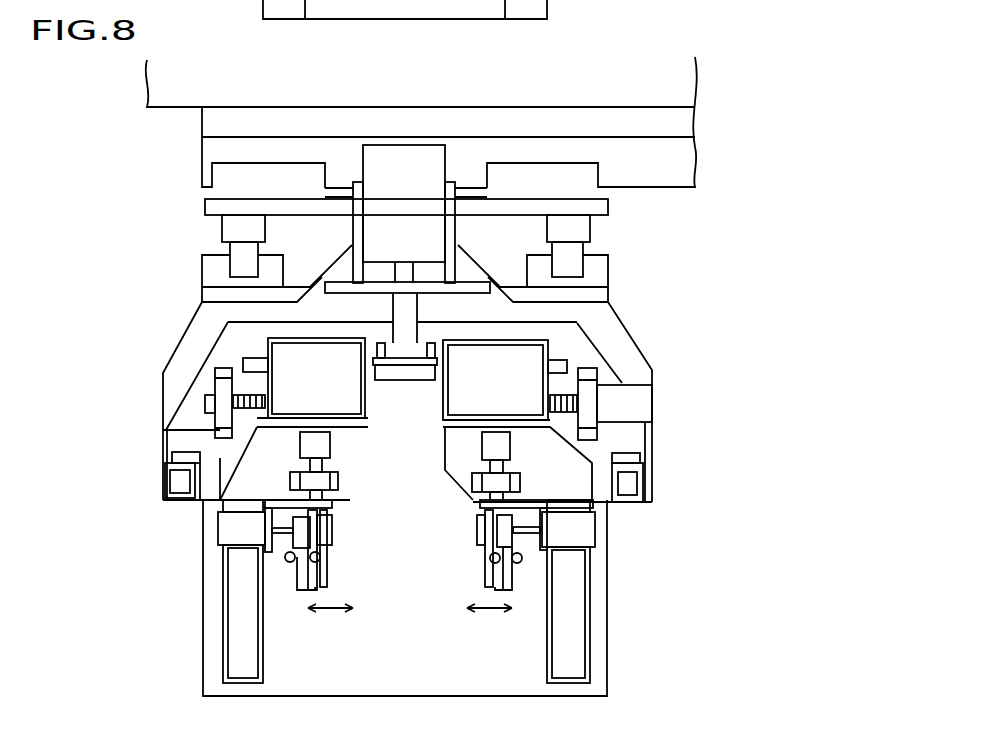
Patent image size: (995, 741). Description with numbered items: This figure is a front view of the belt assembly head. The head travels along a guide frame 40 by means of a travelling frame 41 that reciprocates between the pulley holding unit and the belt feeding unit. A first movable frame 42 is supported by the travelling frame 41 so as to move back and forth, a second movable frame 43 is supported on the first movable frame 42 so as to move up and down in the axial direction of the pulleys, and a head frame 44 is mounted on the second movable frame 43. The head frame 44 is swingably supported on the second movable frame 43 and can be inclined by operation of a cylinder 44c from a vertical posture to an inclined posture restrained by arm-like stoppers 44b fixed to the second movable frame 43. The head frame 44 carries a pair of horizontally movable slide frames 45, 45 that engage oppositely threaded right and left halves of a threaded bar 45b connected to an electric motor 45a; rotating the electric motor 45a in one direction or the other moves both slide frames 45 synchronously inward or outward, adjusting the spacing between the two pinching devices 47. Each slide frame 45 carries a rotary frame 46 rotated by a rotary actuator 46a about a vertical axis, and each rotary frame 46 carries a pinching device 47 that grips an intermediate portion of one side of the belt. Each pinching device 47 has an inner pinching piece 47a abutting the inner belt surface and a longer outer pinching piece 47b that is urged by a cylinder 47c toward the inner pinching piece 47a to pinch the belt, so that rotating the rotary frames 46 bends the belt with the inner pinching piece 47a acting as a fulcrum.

The guide frame 40 is at (680, 82).
The travelling frame 41 is at (600, 210).
The first movable frame 42 is at (603, 617).
The second movable frame 43 is at (165, 378).
The head frame 44 is at (183, 420).
The arm-like stoppers 44b is at (165, 485).
The cylinder 44c is at (420, 152).
The slide frames 45 is at (455, 440).
The electric motor 45a is at (645, 407).
The threaded bar 45b is at (238, 382).
The rotary frame 46 is at (270, 500).
The rotary actuator 46a is at (288, 365).
The pinching device 47 is at (353, 547).
The inner pinching piece 47a is at (327, 578).
The outer pinching piece 47b is at (307, 592).
The cylinder 47c is at (215, 540).